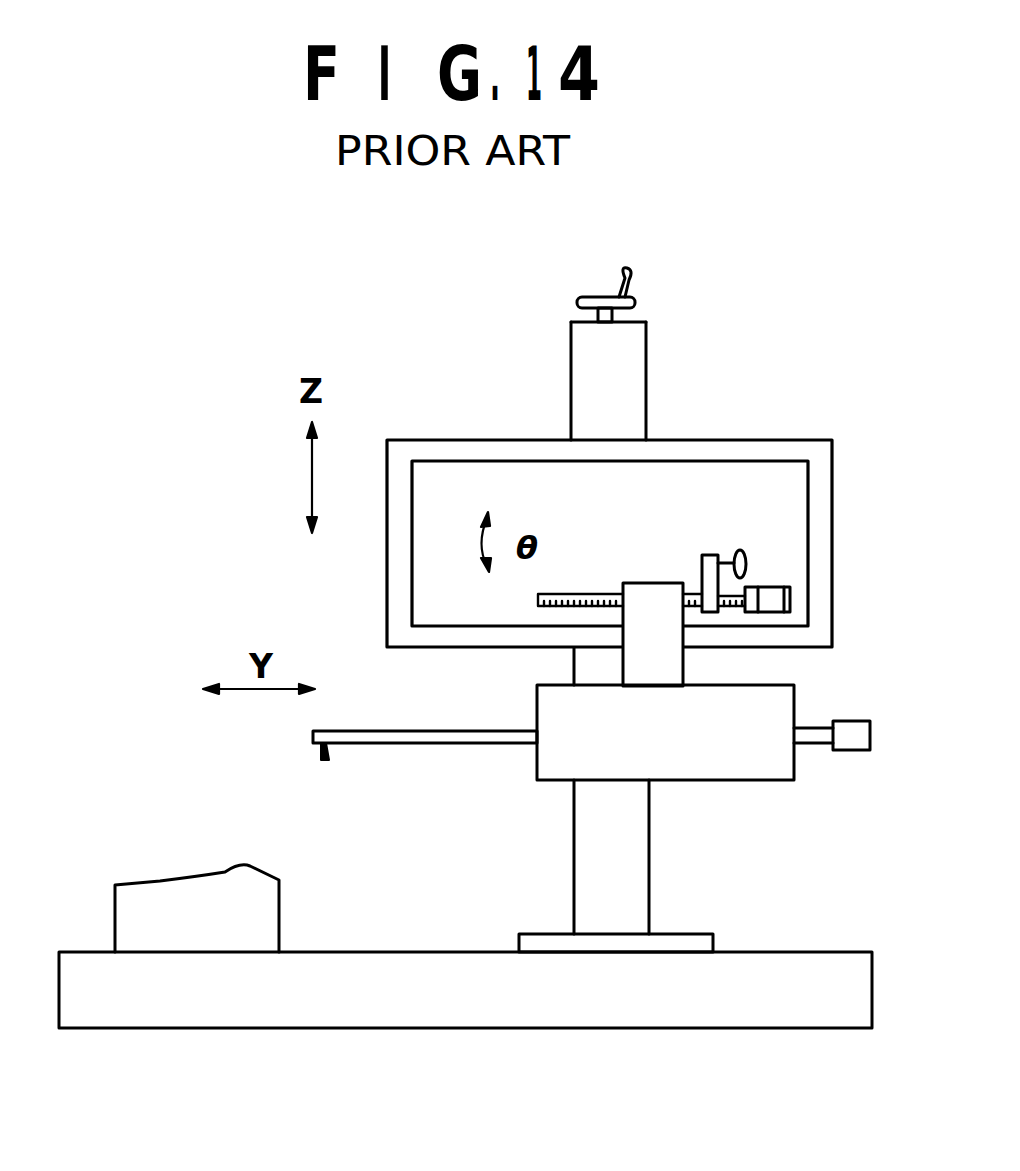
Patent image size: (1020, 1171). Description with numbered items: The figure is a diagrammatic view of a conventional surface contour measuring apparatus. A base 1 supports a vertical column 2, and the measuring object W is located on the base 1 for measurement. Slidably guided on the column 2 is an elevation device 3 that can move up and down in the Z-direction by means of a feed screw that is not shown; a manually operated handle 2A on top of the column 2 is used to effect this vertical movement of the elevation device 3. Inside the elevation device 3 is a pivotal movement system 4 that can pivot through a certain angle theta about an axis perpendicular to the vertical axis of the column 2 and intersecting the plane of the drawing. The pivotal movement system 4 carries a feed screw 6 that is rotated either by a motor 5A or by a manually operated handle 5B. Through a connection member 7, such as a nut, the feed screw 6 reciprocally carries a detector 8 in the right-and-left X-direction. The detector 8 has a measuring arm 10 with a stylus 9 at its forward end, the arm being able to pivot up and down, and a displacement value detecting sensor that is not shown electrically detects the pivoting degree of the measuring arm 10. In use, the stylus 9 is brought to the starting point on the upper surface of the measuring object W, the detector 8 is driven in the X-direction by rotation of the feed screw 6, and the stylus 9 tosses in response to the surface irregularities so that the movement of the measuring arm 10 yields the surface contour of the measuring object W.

The base 1 is at (445, 1030).
The vertical column 2 is at (590, 881).
The manually operated handle 2A is at (585, 298).
The elevation device 3 is at (768, 439).
The pivotal movement system 4 is at (463, 470).
The motor 5A is at (790, 598).
The manually operated handle 5B is at (747, 560).
The feed screw 6 is at (585, 594).
The connection member 7 is at (652, 588).
The detector 8 is at (750, 781).
The stylus 9 is at (325, 760).
The measuring arm 10 is at (426, 745).
The measuring object W is at (128, 916).